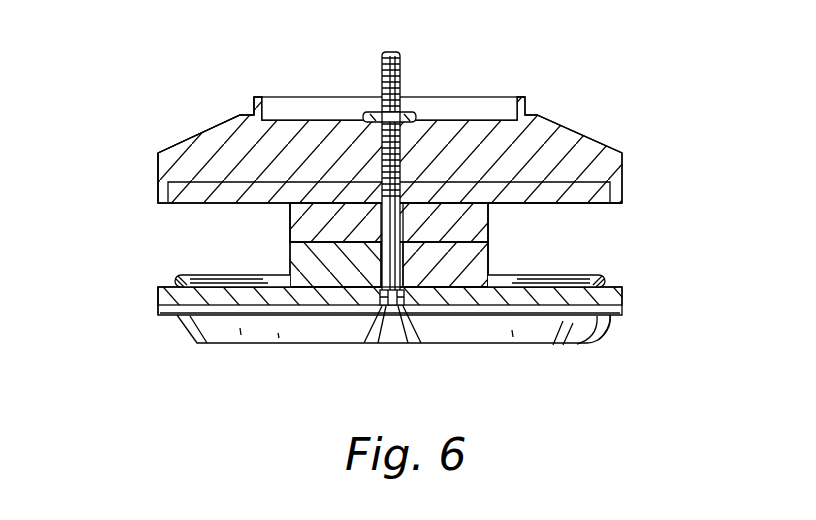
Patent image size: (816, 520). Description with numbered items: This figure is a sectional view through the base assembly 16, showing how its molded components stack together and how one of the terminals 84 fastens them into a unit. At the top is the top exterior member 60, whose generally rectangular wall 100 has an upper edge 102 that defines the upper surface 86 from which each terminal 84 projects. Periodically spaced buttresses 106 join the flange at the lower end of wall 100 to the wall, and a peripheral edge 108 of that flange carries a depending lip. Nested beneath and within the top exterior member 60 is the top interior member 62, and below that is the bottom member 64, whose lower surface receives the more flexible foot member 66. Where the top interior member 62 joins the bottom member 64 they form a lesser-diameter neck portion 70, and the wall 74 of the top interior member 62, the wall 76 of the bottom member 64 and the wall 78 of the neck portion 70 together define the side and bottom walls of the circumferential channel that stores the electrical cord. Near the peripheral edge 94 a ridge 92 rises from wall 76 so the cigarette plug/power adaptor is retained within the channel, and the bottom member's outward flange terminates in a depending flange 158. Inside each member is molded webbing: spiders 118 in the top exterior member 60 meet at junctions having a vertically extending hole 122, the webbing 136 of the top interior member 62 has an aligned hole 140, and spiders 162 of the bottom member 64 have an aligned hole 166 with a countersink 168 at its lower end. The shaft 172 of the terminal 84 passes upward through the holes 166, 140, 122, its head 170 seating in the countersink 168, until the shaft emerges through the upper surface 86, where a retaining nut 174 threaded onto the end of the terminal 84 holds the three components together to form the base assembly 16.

The base assembly 16 is at (658, 144).
The top exterior member 60 is at (562, 178).
The top interior member 62 is at (598, 208).
The bottom member 64 is at (614, 277).
The foot member 66 is at (500, 337).
The neck portion 70 is at (494, 229).
The wall of the top interior member 74 is at (203, 204).
The wall of bottom member 76 is at (164, 285).
The wall of neck portion 78 is at (292, 224).
The terminal 84 is at (401, 62).
The upper surface 86 is at (523, 98).
The ridge 92 is at (212, 277).
The peripheral edge 94 is at (623, 301).
The wall 100 is at (251, 116).
The upper edge 102 is at (257, 97).
The buttress 106 is at (195, 132).
The peripheral edge of flange 108 is at (158, 172).
The spider 118 is at (318, 143).
The vertically extending hole 122 is at (402, 155).
The webbing 136 is at (467, 223).
The vertically extending hole 140 is at (387, 206).
The depending flange 158 is at (602, 320).
The spider 162 is at (473, 286).
The vertically extending hole 166 is at (392, 306).
The countersink 168 is at (386, 306).
The head 170 is at (401, 307).
The shaft 172 is at (381, 290).
The retaining nut 174 is at (410, 114).